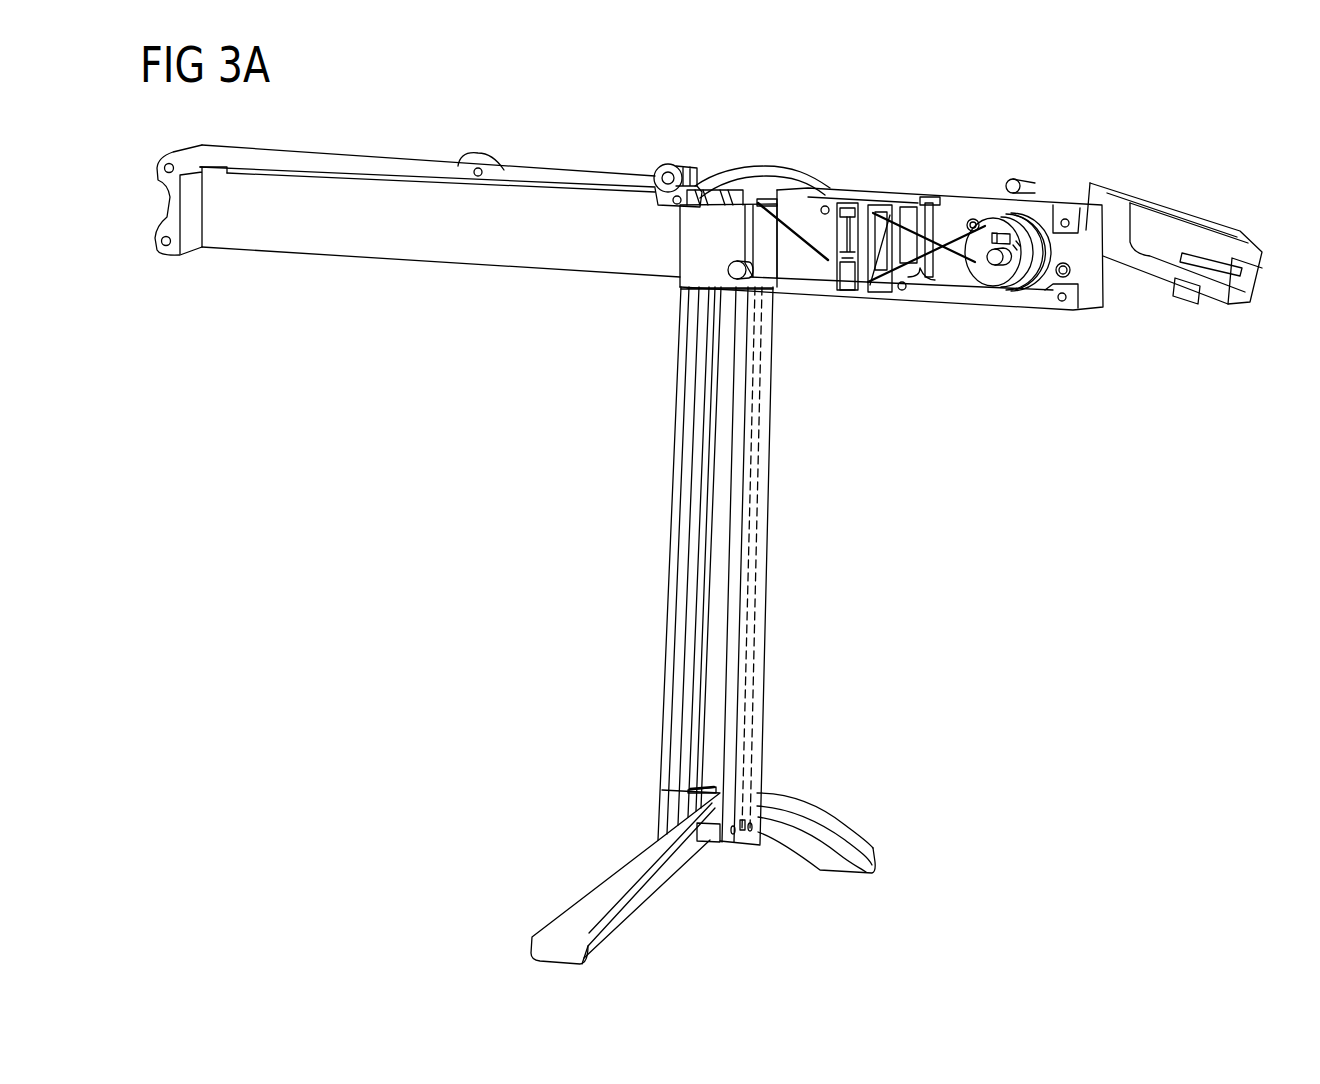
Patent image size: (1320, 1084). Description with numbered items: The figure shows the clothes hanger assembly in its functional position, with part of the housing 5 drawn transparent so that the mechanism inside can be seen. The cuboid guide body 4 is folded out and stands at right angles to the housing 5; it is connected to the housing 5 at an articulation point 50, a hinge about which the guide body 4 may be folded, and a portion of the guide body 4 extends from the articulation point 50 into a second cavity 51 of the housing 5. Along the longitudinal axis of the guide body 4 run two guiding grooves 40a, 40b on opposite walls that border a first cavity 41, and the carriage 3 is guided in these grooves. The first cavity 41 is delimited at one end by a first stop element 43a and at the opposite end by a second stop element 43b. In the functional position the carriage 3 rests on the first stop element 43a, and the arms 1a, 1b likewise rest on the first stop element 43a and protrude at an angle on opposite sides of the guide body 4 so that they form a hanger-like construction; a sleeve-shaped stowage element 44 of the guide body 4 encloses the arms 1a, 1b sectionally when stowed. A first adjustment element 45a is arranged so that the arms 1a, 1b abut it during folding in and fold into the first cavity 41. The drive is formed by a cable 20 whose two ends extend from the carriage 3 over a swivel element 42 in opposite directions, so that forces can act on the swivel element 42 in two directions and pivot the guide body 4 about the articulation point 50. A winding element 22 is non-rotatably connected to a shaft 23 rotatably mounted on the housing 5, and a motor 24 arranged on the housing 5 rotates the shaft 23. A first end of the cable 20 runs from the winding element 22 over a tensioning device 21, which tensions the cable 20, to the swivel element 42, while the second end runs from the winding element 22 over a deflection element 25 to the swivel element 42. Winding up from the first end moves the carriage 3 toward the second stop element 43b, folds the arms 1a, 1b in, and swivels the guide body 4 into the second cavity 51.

The housing 5 is at (417, 195).
The second cavity 51 is at (257, 238).
The deflection element 25 is at (672, 166).
The second stop element 43b is at (710, 190).
The swivel element 42 is at (731, 188).
The cable 20 is at (891, 246).
The tensioning device 21 is at (847, 283).
The winding element 22 is at (1008, 276).
The shaft 23 is at (994, 262).
The motor 24 is at (1115, 200).
The stowage element 44 is at (700, 265).
The first adjustment element 45a is at (730, 289).
The articulation point 50 is at (740, 273).
The guide body 4 is at (707, 566).
The guiding groove 40a is at (688, 602).
The guiding groove 40b is at (754, 513).
The first cavity 41 is at (718, 668).
The carriage 3 is at (703, 770).
The first stop element 43a is at (708, 842).
The arm 1a is at (600, 888).
The arm 1b is at (804, 824).